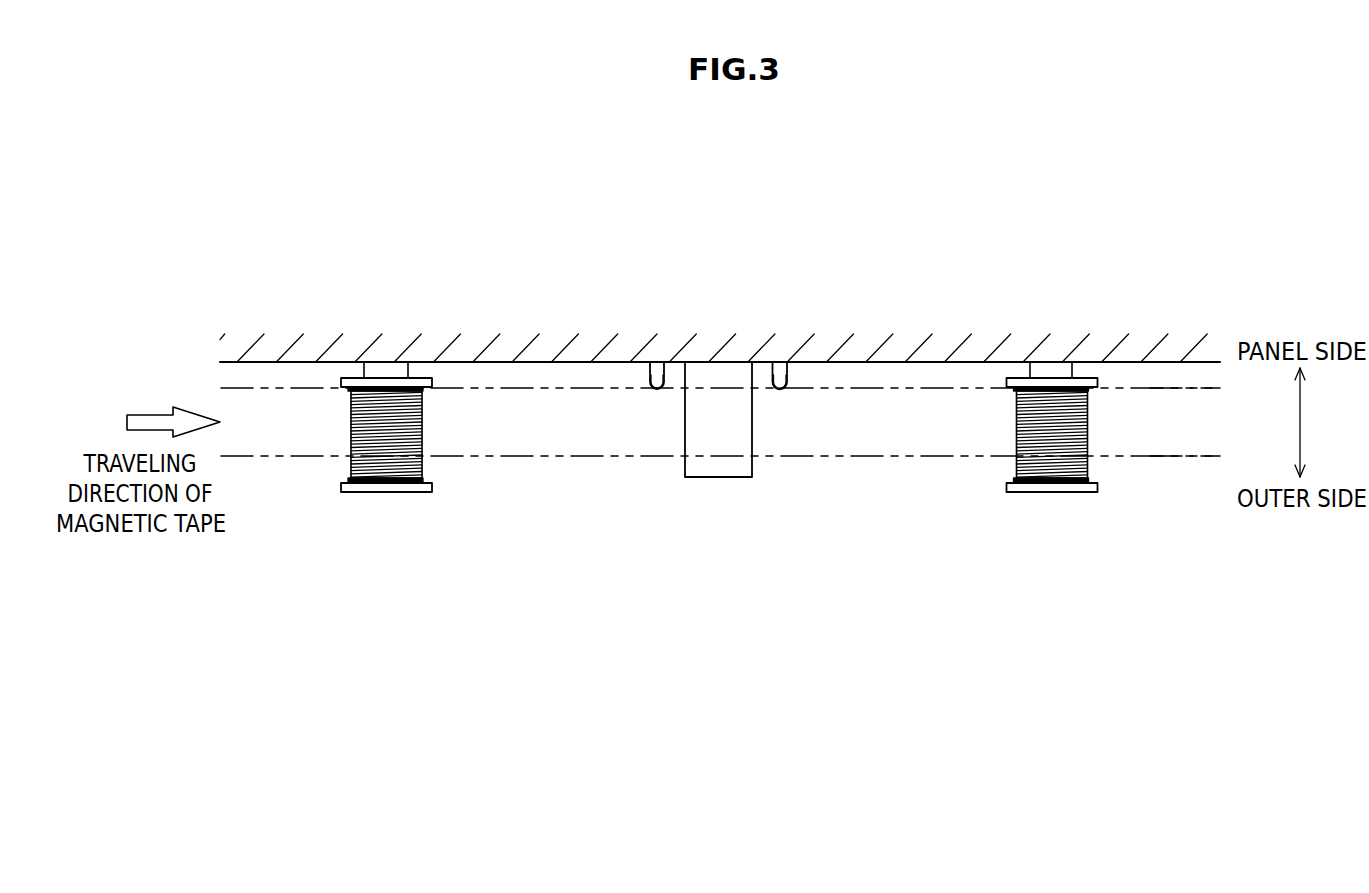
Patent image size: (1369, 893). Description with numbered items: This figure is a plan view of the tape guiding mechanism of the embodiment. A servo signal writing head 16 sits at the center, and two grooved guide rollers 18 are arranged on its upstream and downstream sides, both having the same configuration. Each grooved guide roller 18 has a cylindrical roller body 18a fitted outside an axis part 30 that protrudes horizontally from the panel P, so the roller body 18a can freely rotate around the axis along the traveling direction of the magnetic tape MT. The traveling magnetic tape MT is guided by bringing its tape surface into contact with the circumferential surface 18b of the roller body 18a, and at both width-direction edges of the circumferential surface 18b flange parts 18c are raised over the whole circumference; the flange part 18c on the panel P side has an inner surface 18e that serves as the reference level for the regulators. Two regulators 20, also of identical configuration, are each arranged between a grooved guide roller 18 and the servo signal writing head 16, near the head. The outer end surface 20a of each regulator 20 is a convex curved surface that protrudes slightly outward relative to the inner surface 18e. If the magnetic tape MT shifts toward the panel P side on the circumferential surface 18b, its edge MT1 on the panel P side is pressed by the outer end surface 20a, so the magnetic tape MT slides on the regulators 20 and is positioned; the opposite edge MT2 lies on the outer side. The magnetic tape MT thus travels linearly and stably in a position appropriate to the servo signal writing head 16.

The servo signal writing head 16 is at (710, 465).
The grooved guide roller 18 is at (388, 494).
The roller body 18a is at (423, 465).
The circumferential surface 18b is at (349, 422).
The flange part 18c is at (353, 380).
The inner surface 18e is at (424, 396).
The regulator 20 is at (650, 372).
The outer end surface 20a is at (658, 389).
The axis part 30 is at (383, 368).
The panel P is at (727, 322).
The magnetic tape MT is at (1180, 433).
The edge on the panel side MT1 is at (900, 388).
The outer-side tape edge MT2 is at (910, 458).